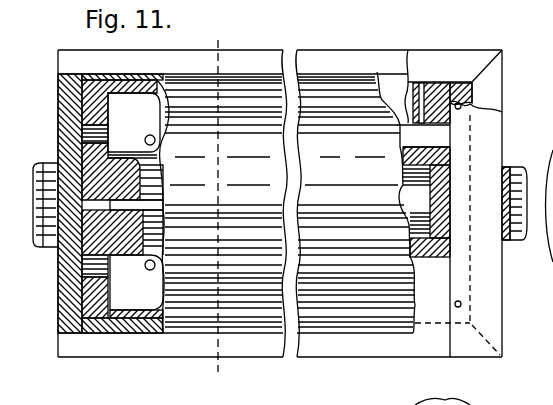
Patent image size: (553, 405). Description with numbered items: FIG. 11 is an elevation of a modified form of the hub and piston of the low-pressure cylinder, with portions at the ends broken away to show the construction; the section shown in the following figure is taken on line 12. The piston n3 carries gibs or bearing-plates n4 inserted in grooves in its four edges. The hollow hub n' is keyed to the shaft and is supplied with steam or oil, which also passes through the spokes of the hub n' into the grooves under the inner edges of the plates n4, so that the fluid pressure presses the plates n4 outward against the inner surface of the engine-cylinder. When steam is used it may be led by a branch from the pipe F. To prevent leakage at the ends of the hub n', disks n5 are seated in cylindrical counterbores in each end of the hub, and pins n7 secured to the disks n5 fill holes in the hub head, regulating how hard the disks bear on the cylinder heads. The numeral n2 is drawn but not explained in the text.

The section line 12- 12 is at (217, 213).
The hollow hub n' is at (290, 202).
The lower ball race cavity n2 is at (115, 335).
The piston n3 is at (418, 85).
The gibs or bearing-plates n4 is at (478, 61).
The disks n5 is at (58, 300).
The pins n7 is at (113, 135).
The pipe F is at (449, 387).